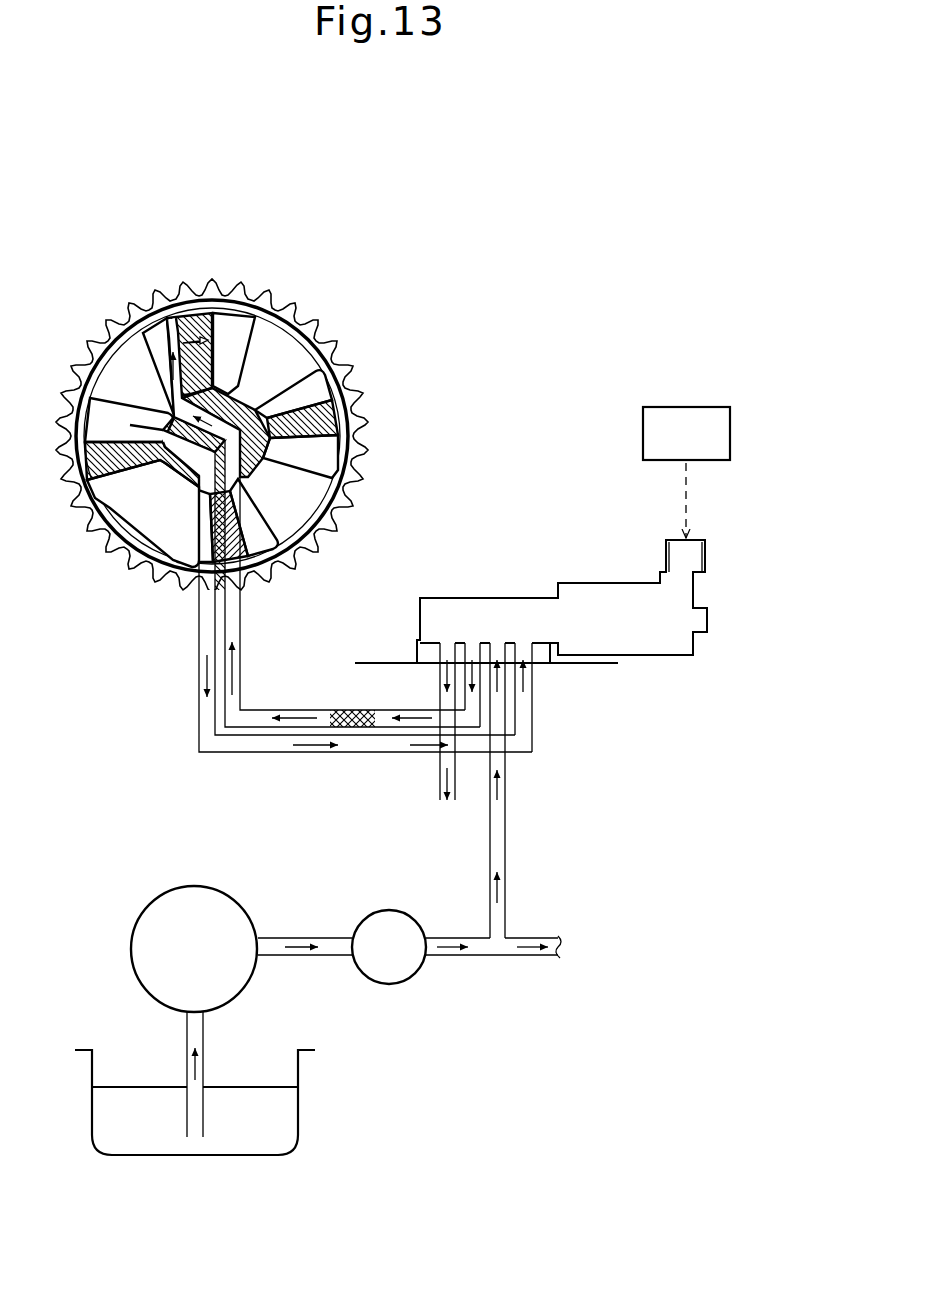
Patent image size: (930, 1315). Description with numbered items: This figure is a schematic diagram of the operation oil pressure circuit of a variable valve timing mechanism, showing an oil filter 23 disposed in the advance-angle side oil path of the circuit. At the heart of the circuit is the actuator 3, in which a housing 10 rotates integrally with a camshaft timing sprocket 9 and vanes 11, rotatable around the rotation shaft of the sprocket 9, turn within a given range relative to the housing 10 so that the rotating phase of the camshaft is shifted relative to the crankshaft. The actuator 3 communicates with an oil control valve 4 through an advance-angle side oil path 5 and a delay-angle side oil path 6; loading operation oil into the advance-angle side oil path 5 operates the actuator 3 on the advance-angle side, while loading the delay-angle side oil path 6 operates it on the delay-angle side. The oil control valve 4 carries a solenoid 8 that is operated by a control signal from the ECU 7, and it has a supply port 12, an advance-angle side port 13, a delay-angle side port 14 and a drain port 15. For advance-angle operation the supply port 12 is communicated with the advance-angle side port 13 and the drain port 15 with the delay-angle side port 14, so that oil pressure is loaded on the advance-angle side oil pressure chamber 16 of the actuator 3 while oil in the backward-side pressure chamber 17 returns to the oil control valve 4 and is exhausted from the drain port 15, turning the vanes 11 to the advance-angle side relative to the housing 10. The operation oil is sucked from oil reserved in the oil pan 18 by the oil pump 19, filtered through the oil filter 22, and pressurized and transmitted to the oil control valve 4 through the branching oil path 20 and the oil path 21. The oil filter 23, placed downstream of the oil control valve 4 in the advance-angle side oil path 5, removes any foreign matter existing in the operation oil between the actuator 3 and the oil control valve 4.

The actuator 3 is at (380, 418).
The oil control valve 4 is at (594, 557).
The advance-angle side oil path 5 is at (242, 680).
The delay-angle side oil path 6 is at (198, 720).
The ECU 7 is at (707, 407).
The solenoid 8 is at (678, 659).
The camshaft timing sprocket 9 is at (288, 307).
The housing 10 is at (288, 358).
The vanes 11 is at (193, 327).
The supply port 12 is at (497, 644).
The advance-angle side port 13 is at (472, 645).
The delay-angle side port 14 is at (524, 645).
The drain port 15 is at (447, 645).
The advance-angle side oil pressure chamber 16 is at (158, 366).
The backward-side pressure chamber 17 is at (105, 418).
The oil pan 18 is at (300, 1123).
The oil pump 19 is at (175, 905).
The branching oil path 20 is at (498, 957).
The oil path 21 is at (506, 860).
The oil filter 22 is at (380, 918).
The oil filter 23 is at (345, 708).